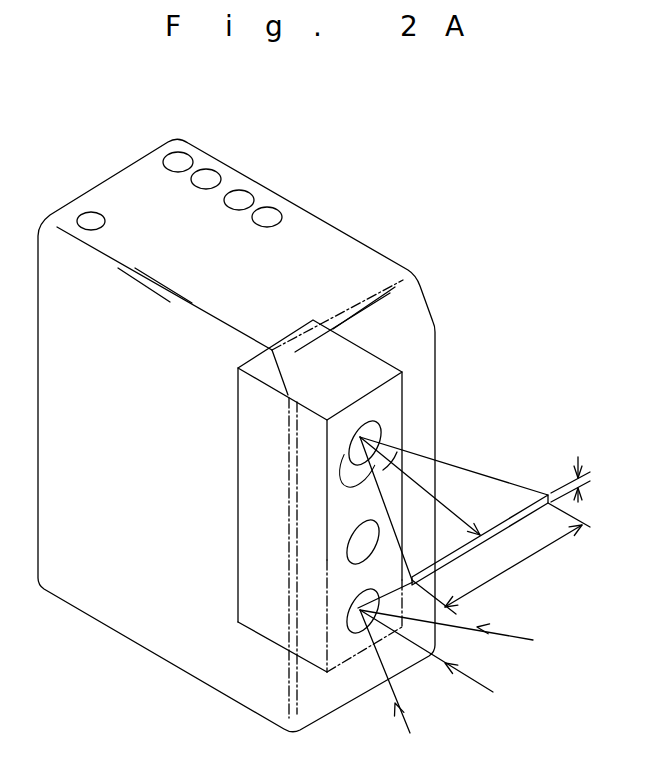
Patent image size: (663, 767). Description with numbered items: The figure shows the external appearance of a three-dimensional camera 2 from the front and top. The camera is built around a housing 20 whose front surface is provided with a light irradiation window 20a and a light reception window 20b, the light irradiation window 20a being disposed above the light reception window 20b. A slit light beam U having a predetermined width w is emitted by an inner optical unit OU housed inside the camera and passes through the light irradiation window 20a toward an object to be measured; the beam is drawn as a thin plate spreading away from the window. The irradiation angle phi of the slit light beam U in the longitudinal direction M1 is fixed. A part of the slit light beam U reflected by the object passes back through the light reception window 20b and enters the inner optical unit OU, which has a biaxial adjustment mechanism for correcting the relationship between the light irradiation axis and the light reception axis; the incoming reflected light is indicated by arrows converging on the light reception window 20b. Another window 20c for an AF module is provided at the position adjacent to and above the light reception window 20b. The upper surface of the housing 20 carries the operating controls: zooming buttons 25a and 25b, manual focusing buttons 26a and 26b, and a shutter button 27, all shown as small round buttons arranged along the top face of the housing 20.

The three-dimensional camera 2 is at (503, 210).
The housing 20 is at (434, 311).
The light irradiation window 20a is at (381, 424).
The light reception window 20b is at (352, 632).
The window for AF module 20c is at (352, 548).
The zooming button 25a is at (177, 153).
The zooming button 25b is at (212, 170).
The manual focusing button 26a is at (252, 192).
The manual focusing button 26b is at (278, 209).
The shutter button 27 is at (80, 212).
The slit light beam U is at (470, 488).
The inner optical unit OU is at (238, 622).
The longitudinal direction M1 is at (501, 558).
The width w is at (577, 479).
The irradiation angle phi is at (373, 473).